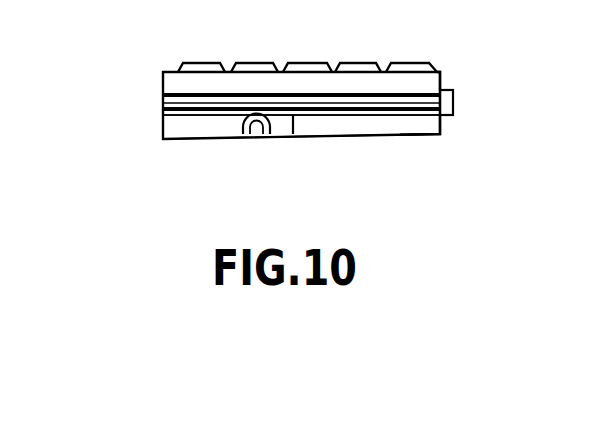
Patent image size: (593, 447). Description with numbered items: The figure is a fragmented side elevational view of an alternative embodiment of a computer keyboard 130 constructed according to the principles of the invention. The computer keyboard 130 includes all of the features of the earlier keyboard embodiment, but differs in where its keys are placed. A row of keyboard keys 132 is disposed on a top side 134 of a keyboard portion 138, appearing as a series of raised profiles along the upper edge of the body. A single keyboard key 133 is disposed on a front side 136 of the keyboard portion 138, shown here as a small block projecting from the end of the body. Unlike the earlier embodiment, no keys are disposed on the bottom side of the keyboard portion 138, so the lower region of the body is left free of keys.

The computer keyboard 130 is at (359, 109).
The keyboard keys 132 is at (302, 63).
The keyboard key 133 is at (453, 102).
The top side 134 is at (435, 82).
The front side 136 is at (443, 133).
The keyboard portion 138 is at (188, 123).